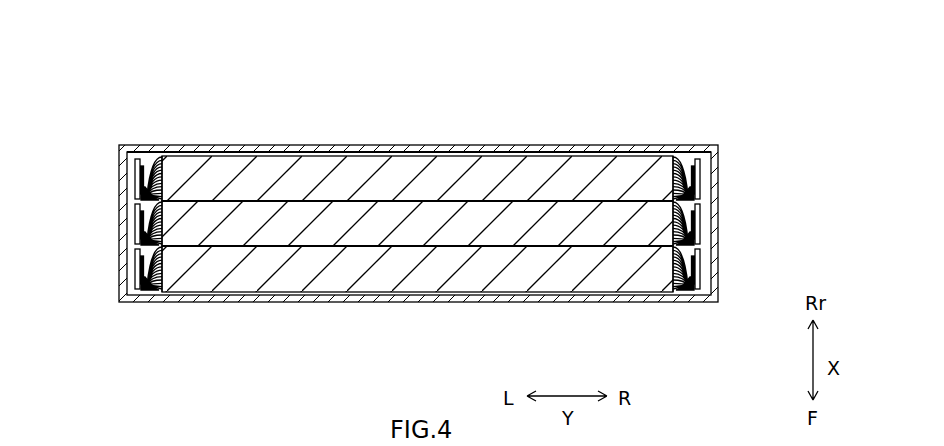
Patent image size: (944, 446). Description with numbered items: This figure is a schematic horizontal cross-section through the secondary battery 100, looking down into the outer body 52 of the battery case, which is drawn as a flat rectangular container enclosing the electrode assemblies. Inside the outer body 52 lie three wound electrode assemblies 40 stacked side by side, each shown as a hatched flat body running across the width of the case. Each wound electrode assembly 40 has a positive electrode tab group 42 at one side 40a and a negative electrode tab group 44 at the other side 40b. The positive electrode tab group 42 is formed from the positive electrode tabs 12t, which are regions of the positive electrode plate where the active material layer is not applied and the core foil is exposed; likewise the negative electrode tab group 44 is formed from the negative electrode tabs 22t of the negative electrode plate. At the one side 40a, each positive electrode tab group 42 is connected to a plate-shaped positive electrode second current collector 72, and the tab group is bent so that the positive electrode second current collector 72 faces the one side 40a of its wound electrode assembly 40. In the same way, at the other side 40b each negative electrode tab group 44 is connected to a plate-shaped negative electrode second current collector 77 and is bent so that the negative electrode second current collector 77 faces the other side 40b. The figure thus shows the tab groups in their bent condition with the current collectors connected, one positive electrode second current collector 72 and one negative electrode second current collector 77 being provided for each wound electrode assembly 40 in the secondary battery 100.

The secondary battery 100 is at (647, 70).
The outer body 52 is at (542, 133).
The wound electrode assembly 40 is at (259, 177).
The one side of the wound electrode assembly 40a is at (148, 291).
The other side of the wound electrode assembly 40b is at (692, 292).
The positive electrode tab group 42 is at (172, 194).
The positive electrode tab 12t is at (152, 158).
The negative electrode tab group 44 is at (706, 194).
The negative electrode tab 22t is at (688, 158).
The positive electrode second current collector 72 is at (135, 163).
The negative electrode second current collector 77 is at (702, 163).